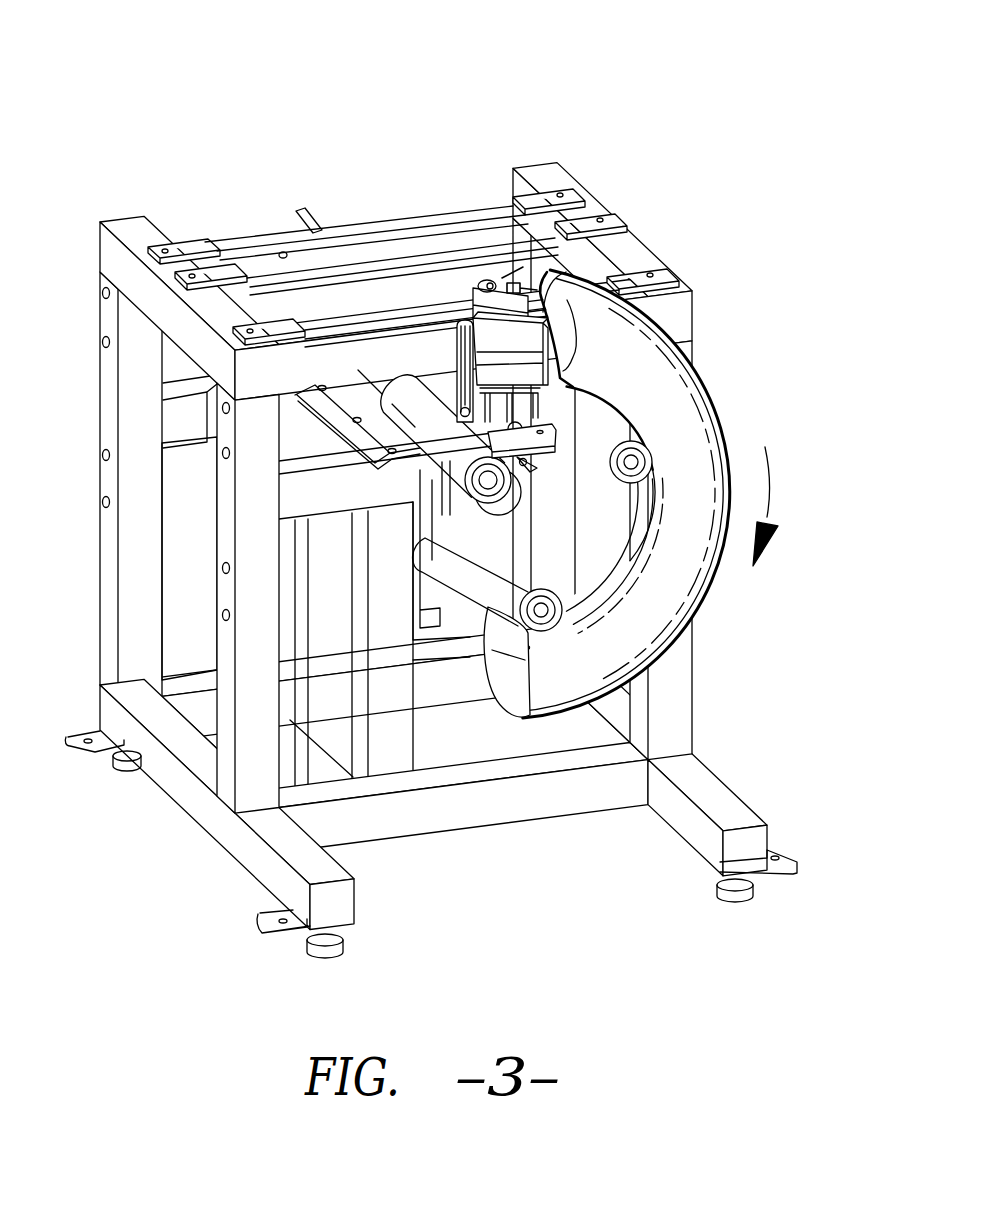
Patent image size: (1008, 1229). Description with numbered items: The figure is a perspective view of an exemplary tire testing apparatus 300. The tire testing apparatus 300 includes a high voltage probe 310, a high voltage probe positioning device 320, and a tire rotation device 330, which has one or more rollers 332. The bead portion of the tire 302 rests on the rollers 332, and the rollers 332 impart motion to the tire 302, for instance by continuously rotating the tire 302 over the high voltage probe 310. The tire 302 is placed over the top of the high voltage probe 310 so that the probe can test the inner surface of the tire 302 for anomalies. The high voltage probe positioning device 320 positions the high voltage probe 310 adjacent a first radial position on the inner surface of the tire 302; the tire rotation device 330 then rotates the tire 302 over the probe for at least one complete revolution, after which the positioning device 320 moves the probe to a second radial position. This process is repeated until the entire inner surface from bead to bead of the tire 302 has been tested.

The tire testing apparatus 300 is at (440, 482).
The tire 302 is at (713, 405).
The high voltage probe 310 is at (476, 284).
The high voltage probe positioning device 320 is at (456, 327).
The tire rotation device 330 is at (593, 205).
The rollers 332 is at (363, 383).